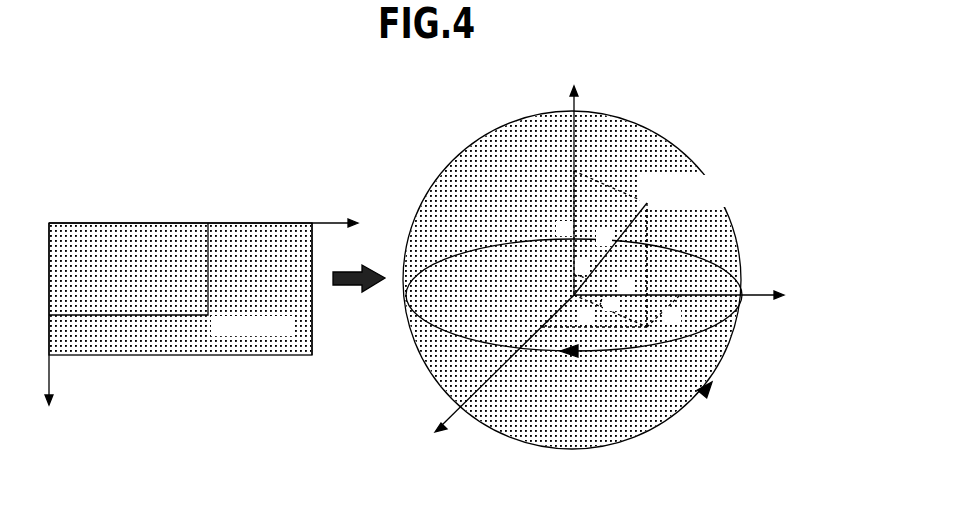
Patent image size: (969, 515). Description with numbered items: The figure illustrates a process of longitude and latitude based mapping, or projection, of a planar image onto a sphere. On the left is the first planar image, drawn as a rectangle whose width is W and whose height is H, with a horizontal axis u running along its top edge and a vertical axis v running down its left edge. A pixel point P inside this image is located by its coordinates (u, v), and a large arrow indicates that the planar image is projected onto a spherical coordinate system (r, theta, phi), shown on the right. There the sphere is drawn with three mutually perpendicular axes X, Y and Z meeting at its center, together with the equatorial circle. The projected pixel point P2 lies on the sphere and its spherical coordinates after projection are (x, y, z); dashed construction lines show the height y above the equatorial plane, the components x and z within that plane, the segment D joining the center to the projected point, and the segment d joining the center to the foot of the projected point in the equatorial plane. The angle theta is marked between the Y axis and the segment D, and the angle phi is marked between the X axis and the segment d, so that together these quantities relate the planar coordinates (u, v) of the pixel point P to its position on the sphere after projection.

The width of the first planar image W is at (180, 306).
The height of the first planar image H is at (325, 289).
The u coordinate of pixel point u is at (203, 212).
The v coordinate of pixel point v is at (57, 314).
The pixel point P is at (348, 254).
The pixel point after projection P2 is at (701, 251).
The X axis X is at (691, 295).
The Y axis Y is at (573, 175).
The Z axis Z is at (493, 379).
The distance D is at (610, 249).
The distance d is at (610, 311).
The x coordinate of projected pixel point x is at (594, 303).
The y coordinate of projected pixel point y is at (565, 233).
The z coordinate of projected pixel point z is at (611, 311).
The spherical coordinate theta is at (582, 268).
The spherical coordinate phi is at (610, 304).